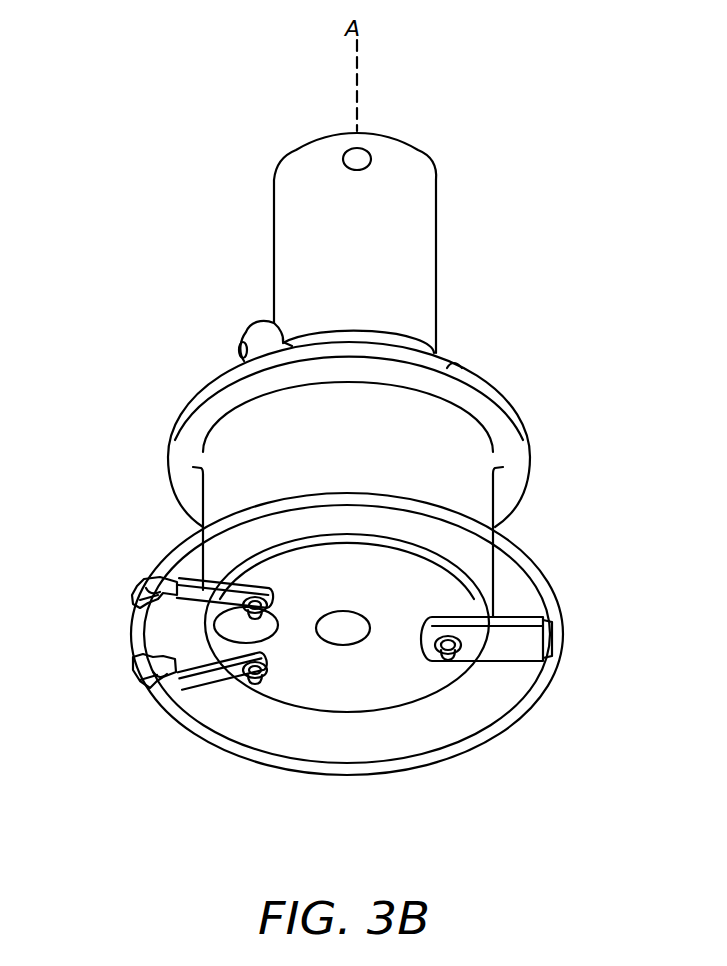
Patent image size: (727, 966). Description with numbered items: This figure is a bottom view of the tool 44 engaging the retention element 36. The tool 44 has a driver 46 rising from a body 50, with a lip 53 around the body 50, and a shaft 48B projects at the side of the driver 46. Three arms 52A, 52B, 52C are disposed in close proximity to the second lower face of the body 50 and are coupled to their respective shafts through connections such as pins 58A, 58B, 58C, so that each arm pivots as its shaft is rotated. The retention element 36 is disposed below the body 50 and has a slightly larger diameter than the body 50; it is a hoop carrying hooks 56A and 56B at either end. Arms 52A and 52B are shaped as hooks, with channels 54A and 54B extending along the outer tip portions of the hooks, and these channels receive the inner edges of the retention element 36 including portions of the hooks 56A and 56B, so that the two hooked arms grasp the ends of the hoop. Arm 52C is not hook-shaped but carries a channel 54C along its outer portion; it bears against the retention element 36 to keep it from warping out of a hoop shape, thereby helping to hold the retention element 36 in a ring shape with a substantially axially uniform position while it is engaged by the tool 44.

The retention element 36 is at (538, 693).
The tool 44 is at (530, 272).
The driver 46 is at (410, 229).
The shaft 48B is at (262, 340).
The body 50 is at (418, 455).
The lip 53 is at (530, 453).
The arm 52A is at (210, 688).
The arm 52B is at (220, 575).
The arm 52C is at (527, 647).
The channel 54A is at (145, 693).
The channel 54B is at (160, 580).
The channel 54C is at (552, 642).
The hook 56A is at (157, 667).
The hook 56B is at (147, 603).
The pin 58A is at (252, 684).
The pin 58B is at (270, 608).
The pin 58C is at (449, 655).